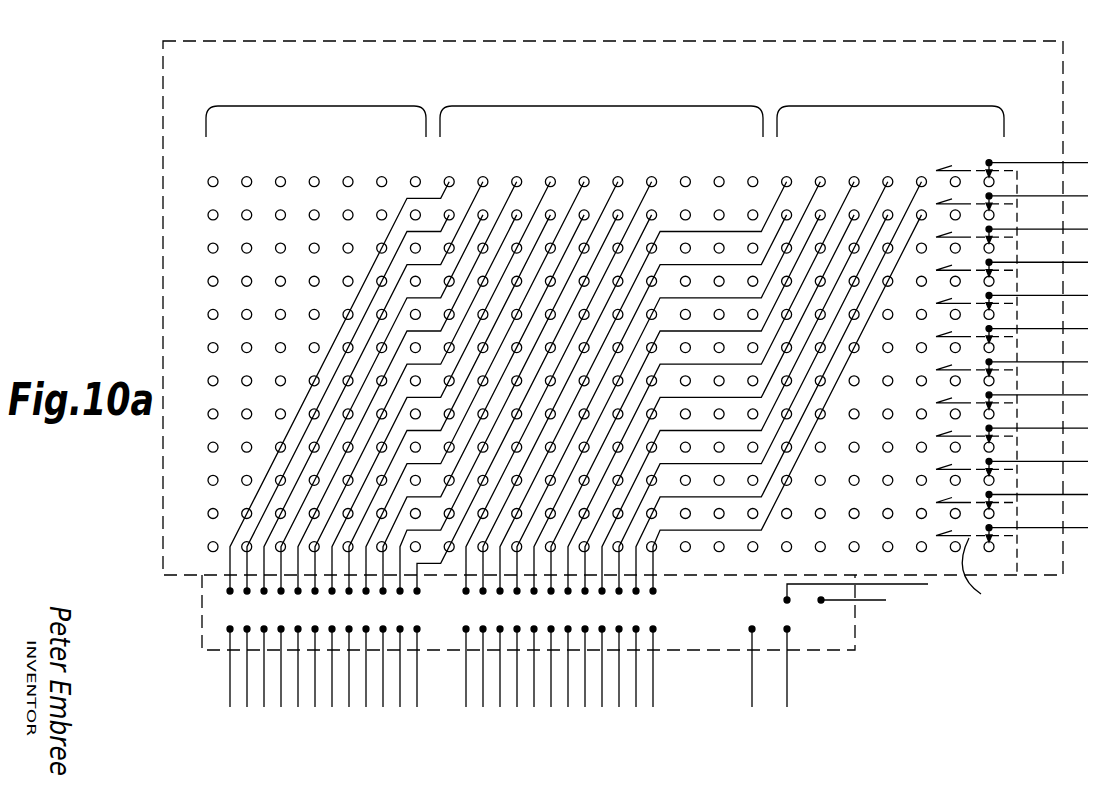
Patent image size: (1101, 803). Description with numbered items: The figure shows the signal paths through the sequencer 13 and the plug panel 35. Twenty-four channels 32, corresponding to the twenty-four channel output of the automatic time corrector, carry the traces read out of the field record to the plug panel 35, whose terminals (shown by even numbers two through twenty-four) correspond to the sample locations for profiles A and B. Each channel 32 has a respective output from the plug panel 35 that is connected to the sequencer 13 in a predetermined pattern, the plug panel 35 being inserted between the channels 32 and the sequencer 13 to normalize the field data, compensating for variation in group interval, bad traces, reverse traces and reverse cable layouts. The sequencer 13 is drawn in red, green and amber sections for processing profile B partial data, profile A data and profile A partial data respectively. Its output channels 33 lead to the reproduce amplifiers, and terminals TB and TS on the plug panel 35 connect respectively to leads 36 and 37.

The sequencer 13 is at (546, 321).
The channels 32 is at (230, 680).
The output channels 33 is at (1030, 163).
The plug panel 35 is at (201, 620).
The lead 36 is at (865, 603).
The lead 37 is at (893, 585).